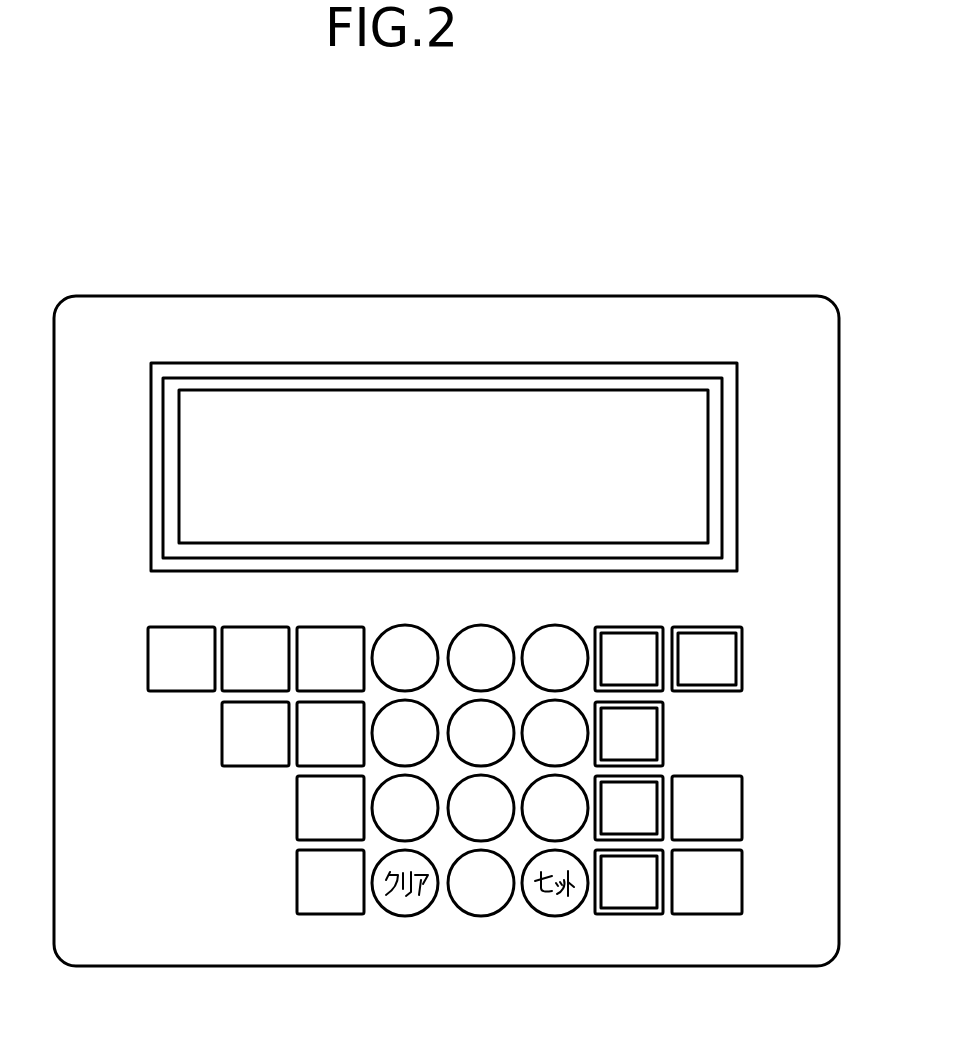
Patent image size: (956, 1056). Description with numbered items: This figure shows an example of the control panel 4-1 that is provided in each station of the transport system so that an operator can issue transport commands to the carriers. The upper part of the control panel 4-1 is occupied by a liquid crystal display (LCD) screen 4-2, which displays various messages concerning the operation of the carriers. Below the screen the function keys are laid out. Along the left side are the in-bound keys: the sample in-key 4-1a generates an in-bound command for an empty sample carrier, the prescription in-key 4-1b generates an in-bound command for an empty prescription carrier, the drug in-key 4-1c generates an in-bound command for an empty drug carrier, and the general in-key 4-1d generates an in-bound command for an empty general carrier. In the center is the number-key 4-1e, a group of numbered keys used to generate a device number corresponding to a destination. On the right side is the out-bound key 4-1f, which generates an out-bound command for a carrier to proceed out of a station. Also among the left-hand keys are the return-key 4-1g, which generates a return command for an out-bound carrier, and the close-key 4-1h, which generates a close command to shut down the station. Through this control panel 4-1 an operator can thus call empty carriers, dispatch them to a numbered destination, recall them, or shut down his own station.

The control panel 4-1 is at (545, 279).
The liquid crystal display screen 4-2 is at (651, 363).
The sample in-key 4-1a is at (370, 604).
The prescription in-key 4-1b is at (310, 742).
The drug in-key 4-1c is at (297, 815).
The general in-key 4-1d is at (297, 897).
The number-key 4-1e is at (577, 918).
The out-bound key 4-1f is at (712, 914).
The return-key 4-1g is at (222, 726).
The close-key 4-1h is at (148, 658).